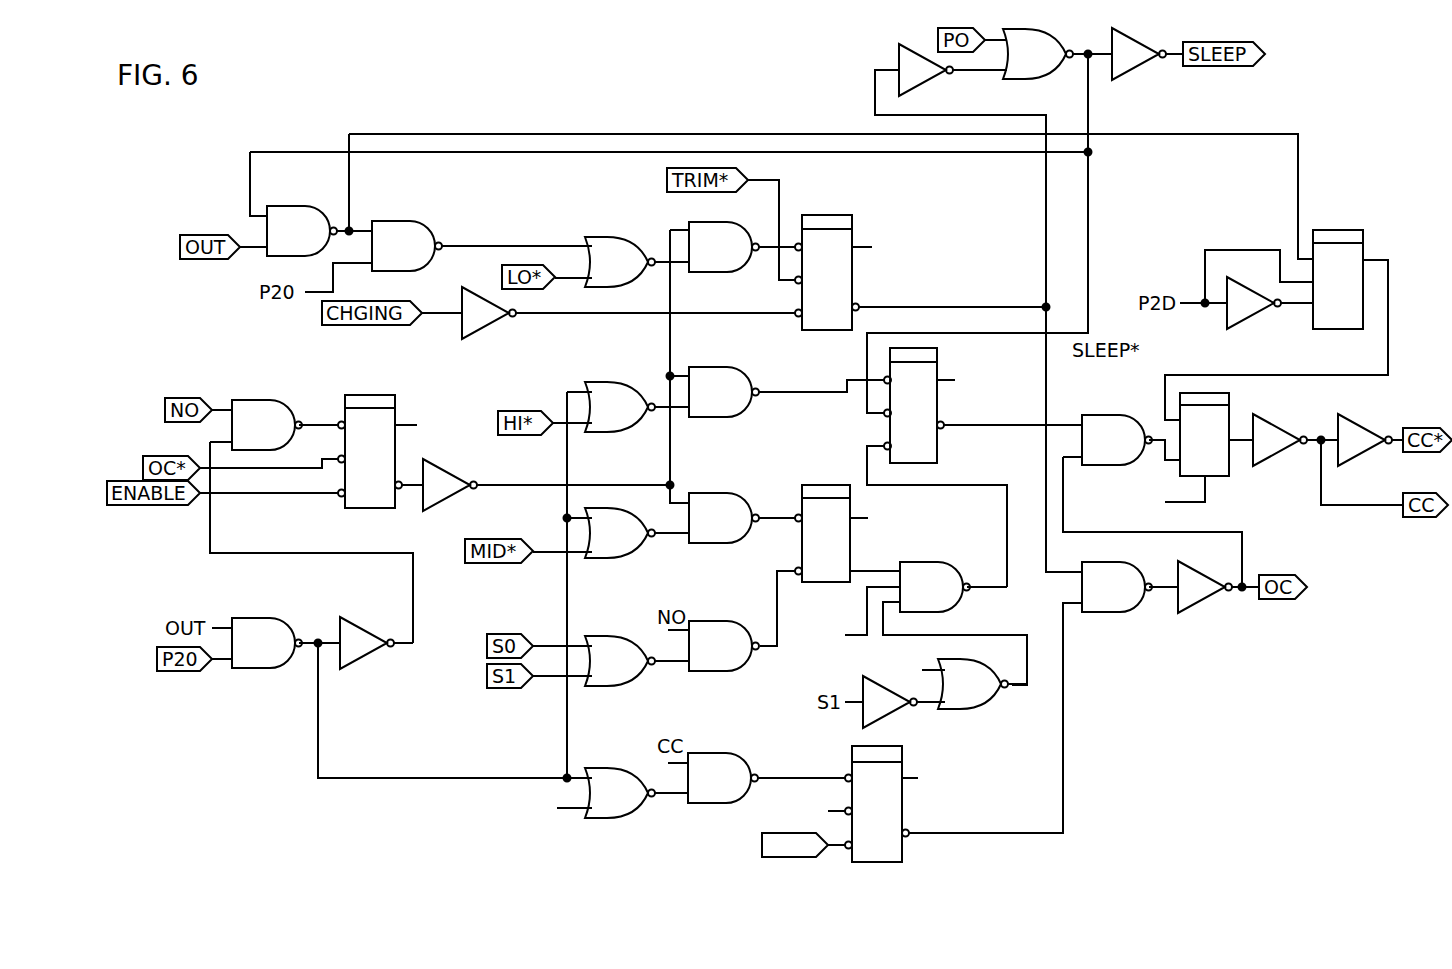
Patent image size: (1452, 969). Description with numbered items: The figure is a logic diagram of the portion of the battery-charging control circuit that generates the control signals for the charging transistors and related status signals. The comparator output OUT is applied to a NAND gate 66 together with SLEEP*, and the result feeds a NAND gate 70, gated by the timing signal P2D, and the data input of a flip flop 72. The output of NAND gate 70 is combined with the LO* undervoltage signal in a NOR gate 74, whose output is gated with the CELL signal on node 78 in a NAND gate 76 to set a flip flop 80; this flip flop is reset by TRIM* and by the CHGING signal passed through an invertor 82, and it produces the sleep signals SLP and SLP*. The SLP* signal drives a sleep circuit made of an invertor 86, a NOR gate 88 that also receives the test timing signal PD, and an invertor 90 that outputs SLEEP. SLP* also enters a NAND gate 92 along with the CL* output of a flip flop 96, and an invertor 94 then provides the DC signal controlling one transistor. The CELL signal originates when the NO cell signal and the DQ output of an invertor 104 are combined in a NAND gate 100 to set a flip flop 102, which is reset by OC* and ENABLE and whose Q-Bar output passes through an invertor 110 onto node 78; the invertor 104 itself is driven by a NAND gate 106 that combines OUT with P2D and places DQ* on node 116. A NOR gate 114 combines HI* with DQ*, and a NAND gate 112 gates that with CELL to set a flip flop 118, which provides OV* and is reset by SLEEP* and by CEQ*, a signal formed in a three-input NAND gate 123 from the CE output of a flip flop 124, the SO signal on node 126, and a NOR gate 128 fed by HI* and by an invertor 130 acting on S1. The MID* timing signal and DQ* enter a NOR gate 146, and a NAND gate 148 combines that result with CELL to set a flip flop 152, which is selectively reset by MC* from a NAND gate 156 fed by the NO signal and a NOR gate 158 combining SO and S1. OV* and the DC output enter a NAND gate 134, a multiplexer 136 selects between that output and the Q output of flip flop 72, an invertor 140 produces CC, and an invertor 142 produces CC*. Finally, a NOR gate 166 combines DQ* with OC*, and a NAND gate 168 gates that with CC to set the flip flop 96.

The NAND gate 66 is at (285, 243).
The NAND gate 70 is at (390, 258).
The NOR gate 74 is at (607, 274).
The NAND gate 76 is at (707, 259).
The flip flop 80 is at (823, 222).
The invertor 82 is at (477, 327).
The invertor 86 is at (903, 62).
The NOR gate 88 is at (1025, 66).
The invertor 90 is at (1137, 62).
The flip flop 72 is at (1342, 232).
The NAND gate 100 is at (245, 437).
The flip flop 102 is at (362, 502).
The invertor 110 is at (442, 493).
The node 78 is at (497, 482).
The invertor 104 is at (353, 657).
The NAND gate 106 is at (245, 655).
The node 116 is at (375, 778).
The NOR gate 114 is at (601, 419).
The NAND gate 112 is at (701, 404).
The flip flop 118 is at (893, 427).
The NOR gate 146 is at (601, 545).
The NAND gate 148 is at (701, 530).
The flip flop 152 is at (843, 553).
The flip flop 124 is at (832, 580).
The NAND gate 123 is at (912, 599).
The node 126 is at (858, 638).
The NAND gate 156 is at (701, 658).
The NOR gate 158 is at (601, 673).
The NOR gate 128 is at (954, 696).
The invertor 130 is at (880, 712).
The NOR gate 166 is at (601, 805).
The NAND gate 168 is at (700, 790).
The flip flop 96 is at (890, 855).
The NAND gate 134 is at (1094, 452).
The multiplexer 136 is at (1217, 470).
The invertor 140 is at (1265, 418).
The invertor 142 is at (1352, 425).
The NAND gate 92 is at (1100, 599).
The invertor 94 is at (1193, 598).